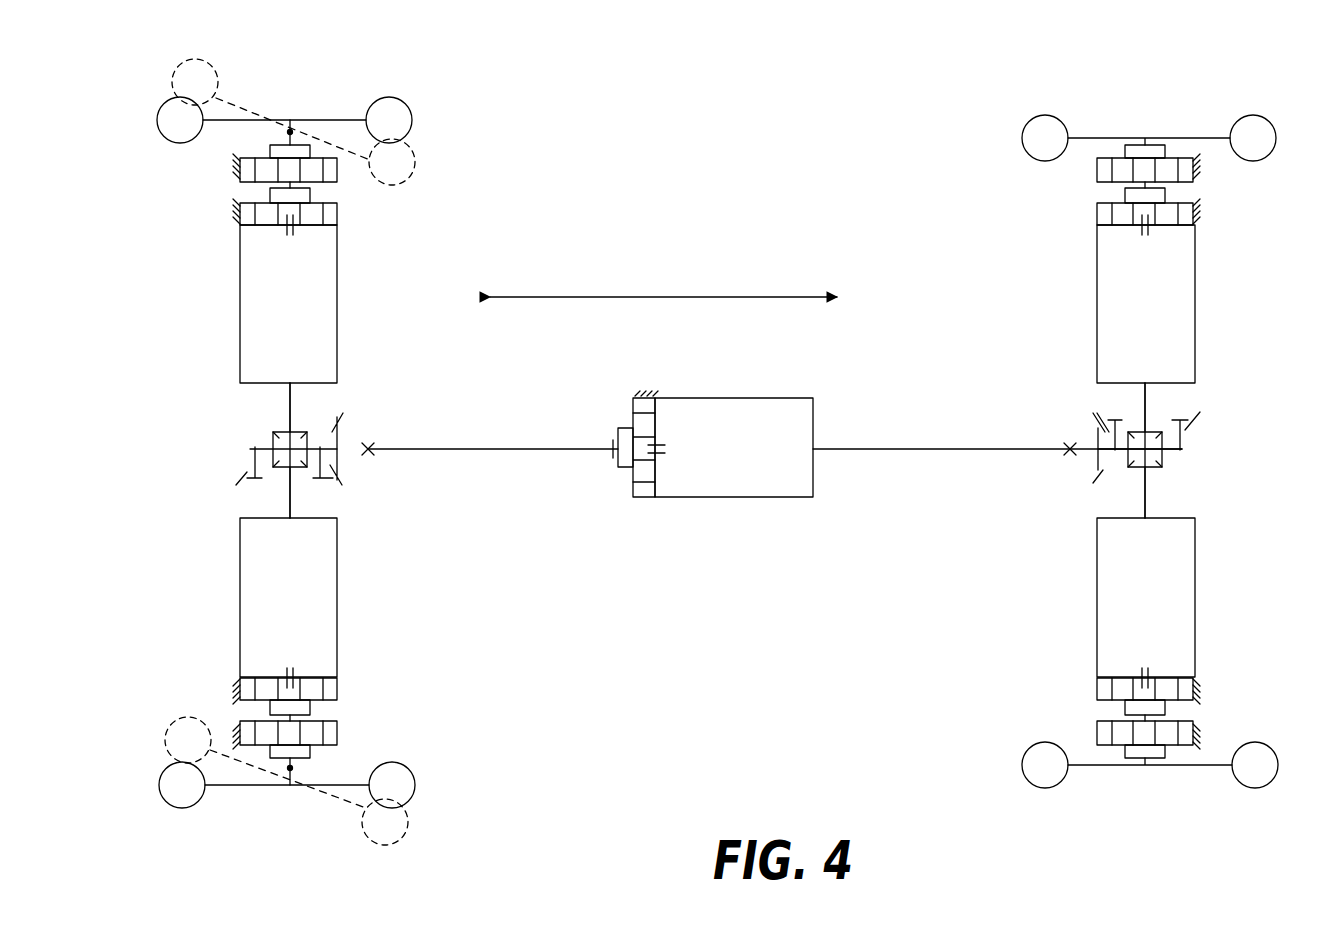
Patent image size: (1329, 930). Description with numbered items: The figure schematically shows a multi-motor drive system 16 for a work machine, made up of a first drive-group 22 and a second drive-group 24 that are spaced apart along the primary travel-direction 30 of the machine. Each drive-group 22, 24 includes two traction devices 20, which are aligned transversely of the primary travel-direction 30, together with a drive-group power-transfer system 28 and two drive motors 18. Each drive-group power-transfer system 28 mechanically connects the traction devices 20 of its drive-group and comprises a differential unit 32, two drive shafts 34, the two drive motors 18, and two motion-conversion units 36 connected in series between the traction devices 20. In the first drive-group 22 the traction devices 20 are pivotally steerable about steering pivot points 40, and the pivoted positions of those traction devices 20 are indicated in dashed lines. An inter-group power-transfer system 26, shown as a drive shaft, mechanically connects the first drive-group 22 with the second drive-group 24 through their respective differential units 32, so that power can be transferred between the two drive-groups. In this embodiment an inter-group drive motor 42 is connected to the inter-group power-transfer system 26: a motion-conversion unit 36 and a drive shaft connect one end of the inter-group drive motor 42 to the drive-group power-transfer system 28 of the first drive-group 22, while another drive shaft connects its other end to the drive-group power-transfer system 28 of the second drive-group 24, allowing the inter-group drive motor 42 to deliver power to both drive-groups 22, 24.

The drive system 16 is at (782, 213).
The drive motor 18 is at (240, 272).
The traction device 20 is at (230, 120).
The first drive-group 22 is at (435, 120).
The second drive-group 24 is at (1095, 120).
The inter-group power-transfer system 26 is at (917, 450).
The drive-group power-transfer system 28 is at (445, 533).
The primary travel-direction 30 is at (613, 297).
The differential unit 32 is at (273, 440).
The drive shaft 34 is at (290, 410).
The motion-conversion unit 36 is at (337, 213).
The steering pivot point 40 is at (295, 131).
The inter-group drive motor 42 is at (713, 444).